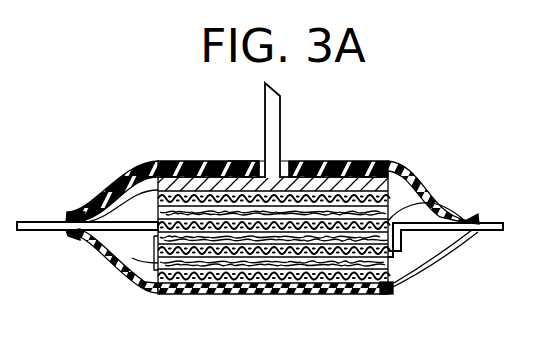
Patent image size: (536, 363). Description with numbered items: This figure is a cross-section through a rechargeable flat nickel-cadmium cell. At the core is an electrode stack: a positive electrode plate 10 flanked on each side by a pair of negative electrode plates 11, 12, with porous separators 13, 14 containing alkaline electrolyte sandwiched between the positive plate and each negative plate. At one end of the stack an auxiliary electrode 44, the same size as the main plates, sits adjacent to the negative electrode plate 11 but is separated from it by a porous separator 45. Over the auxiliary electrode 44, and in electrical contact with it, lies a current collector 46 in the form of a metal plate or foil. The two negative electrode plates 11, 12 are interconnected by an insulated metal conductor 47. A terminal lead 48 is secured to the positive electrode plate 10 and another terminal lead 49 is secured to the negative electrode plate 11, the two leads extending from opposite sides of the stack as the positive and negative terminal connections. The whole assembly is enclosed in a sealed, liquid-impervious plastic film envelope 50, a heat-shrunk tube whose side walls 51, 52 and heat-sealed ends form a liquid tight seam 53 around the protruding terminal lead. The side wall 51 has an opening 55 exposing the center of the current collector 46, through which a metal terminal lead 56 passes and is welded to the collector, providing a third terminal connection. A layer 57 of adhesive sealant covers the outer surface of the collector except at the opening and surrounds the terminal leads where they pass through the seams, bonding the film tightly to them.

The positive electrode plate 10 is at (390, 258).
The negative electrode plate 11 is at (422, 199).
The negative electrode plate 12 is at (381, 293).
The porous separator 13 is at (402, 216).
The porous separator 14 is at (396, 280).
The auxiliary electrode 44 is at (155, 214).
The porous separator 45 is at (147, 208).
The current collector 46 is at (220, 187).
The insulated metal conductor 47 is at (127, 268).
The terminal lead 48 is at (494, 222).
The terminal lead 49 is at (42, 221).
The plastic film envelope 50 is at (157, 160).
The side wall 51 is at (243, 162).
The side wall 52 is at (326, 293).
The liquid tight seam 53 is at (472, 239).
The opening 55 is at (284, 162).
The metal terminal lead 56 is at (268, 117).
The layer of adhesive sealant 57 is at (330, 172).